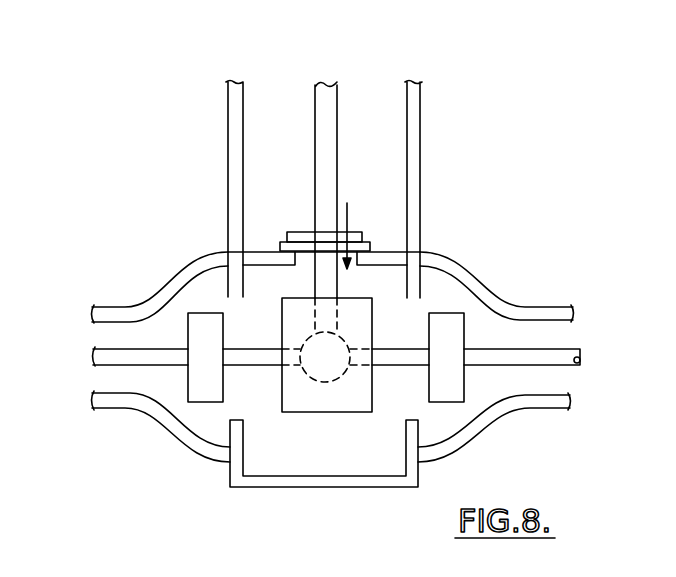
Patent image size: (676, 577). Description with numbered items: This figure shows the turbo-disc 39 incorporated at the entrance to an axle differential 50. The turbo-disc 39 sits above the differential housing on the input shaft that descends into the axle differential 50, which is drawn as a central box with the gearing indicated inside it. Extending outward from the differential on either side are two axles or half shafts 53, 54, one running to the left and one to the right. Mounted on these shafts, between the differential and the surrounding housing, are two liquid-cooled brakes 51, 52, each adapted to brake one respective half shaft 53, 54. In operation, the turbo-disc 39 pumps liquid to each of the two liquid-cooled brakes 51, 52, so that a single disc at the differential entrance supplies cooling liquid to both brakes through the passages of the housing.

The turbo-disc 39 is at (300, 242).
The axle differential 50 is at (338, 400).
The liquid-cooled brake 51 is at (202, 378).
The liquid-cooled brake 52 is at (447, 328).
The half shaft 53 is at (110, 357).
The half shaft 54 is at (583, 358).